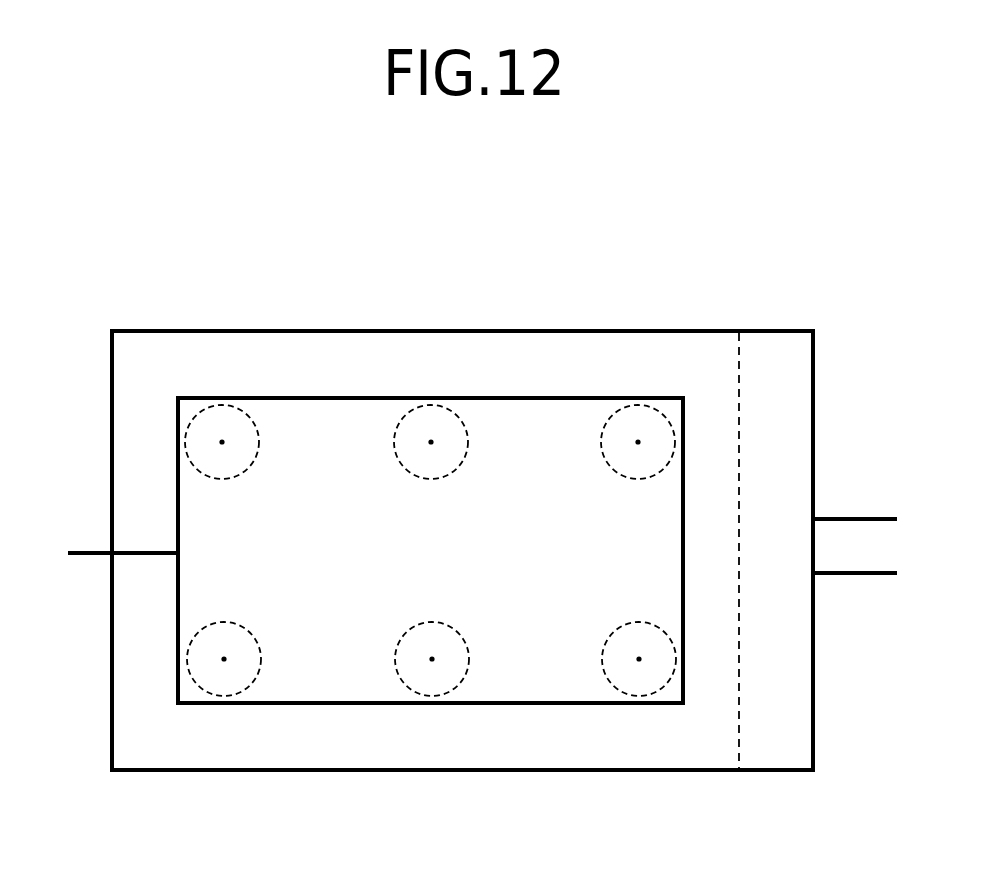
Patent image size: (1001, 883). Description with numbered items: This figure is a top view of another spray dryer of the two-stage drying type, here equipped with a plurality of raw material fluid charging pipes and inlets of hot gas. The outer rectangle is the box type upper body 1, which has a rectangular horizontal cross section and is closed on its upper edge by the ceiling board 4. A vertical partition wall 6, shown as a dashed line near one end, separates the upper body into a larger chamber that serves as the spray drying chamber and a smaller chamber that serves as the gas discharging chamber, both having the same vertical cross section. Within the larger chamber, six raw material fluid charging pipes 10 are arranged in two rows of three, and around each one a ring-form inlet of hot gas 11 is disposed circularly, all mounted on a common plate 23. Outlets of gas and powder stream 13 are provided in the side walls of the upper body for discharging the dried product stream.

The upper body 1 is at (433, 331).
The ceiling board 4 is at (643, 727).
The vertical partition wall 6 is at (740, 384).
The electrode pin 10 is at (222, 442).
The ring-form inlet of hot gas 11 is at (246, 407).
The outlet of gas and powder stream 13 is at (82, 552).
The element plate 23 is at (480, 704).